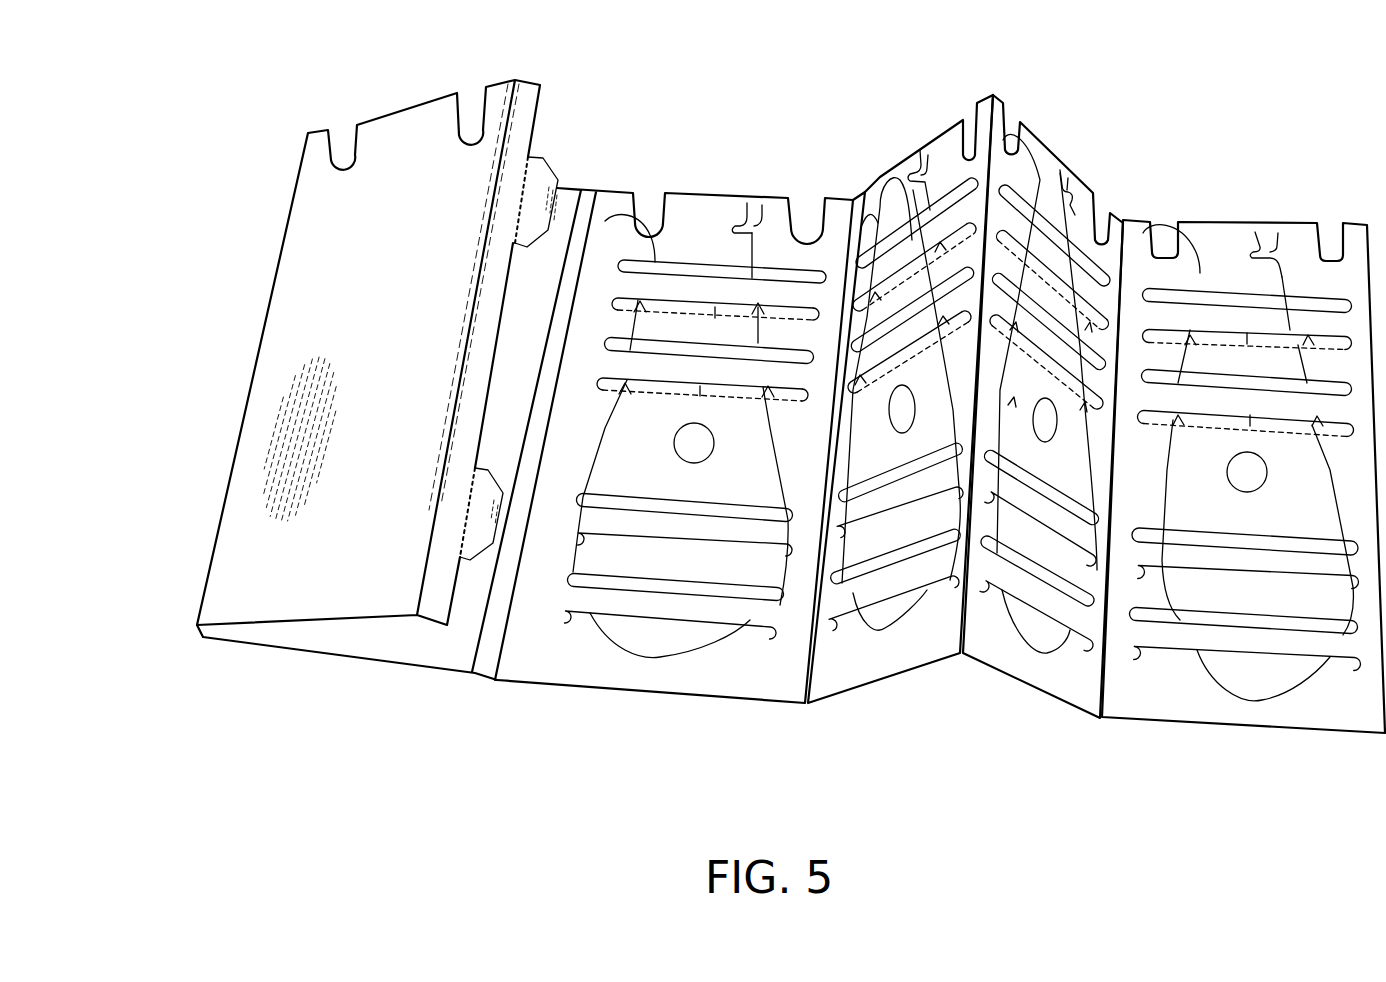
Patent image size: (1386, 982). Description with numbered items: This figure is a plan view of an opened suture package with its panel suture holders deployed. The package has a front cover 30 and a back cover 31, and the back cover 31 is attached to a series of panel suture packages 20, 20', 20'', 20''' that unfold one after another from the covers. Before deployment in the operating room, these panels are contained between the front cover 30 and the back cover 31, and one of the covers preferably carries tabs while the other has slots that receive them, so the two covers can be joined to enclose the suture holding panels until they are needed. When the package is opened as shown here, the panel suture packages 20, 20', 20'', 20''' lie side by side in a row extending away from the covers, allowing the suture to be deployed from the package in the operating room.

The front cover 30 is at (414, 135).
The back cover 31 is at (380, 640).
The panel suture package 20 is at (662, 490).
The panel suture package 20' is at (900, 440).
The panel suture package 20'' is at (1043, 444).
The panel suture package 20''' is at (1243, 524).